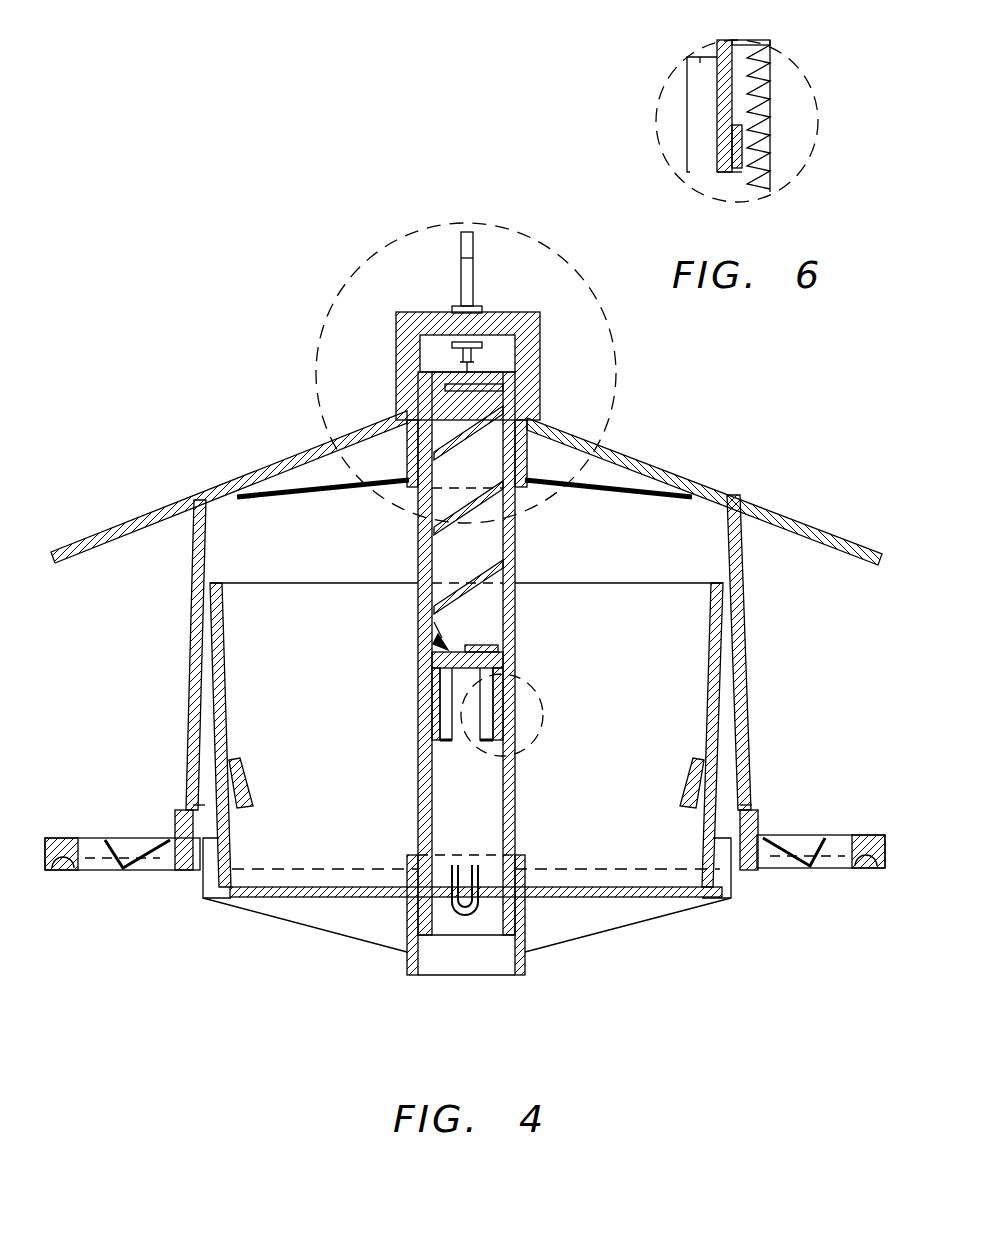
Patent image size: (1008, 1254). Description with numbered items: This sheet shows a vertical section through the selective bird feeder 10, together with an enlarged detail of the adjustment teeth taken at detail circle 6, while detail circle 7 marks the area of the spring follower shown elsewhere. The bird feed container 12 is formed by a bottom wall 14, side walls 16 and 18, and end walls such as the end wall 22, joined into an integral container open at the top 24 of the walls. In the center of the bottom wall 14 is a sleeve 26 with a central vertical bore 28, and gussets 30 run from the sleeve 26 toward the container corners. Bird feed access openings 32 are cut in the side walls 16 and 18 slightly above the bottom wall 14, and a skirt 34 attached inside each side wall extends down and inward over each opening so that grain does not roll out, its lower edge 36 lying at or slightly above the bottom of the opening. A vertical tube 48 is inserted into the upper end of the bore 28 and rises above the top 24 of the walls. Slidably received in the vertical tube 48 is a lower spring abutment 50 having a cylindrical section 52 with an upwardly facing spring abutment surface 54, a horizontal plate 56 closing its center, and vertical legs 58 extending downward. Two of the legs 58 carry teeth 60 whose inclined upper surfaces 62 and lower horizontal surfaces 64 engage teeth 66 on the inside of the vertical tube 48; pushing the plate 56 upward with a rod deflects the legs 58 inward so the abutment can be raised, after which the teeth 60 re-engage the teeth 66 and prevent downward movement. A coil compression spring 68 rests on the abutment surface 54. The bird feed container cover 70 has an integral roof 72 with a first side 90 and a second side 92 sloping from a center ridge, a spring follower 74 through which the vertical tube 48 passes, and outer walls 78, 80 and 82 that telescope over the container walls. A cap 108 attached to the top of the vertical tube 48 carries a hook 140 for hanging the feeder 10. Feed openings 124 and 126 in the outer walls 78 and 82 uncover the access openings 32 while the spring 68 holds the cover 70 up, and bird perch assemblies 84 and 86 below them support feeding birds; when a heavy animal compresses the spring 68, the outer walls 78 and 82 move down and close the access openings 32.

In FIG. 4, the detail area of FIG. 6 is at (548, 716).
In FIG. 4, the detail area of FIG. 7 is at (320, 318).
In FIG. 4, the bird feeder 10 is at (484, 959).
In FIG. 4, the bird feed container 12 is at (652, 938).
In FIG. 4, the bottom wall 14 is at (270, 900).
In FIG. 4, the side wall 16 is at (236, 852).
In FIG. 4, the side wall 18 is at (708, 668).
In FIG. 4, the end wall 22 is at (365, 592).
In FIG. 4, the top of the side walls and end walls 24 is at (290, 582).
In FIG. 4, the sleeve 26 is at (407, 938).
In FIG. 4, the central vertical bore 28 is at (458, 963).
In FIG. 4, the gussets 30 is at (347, 922).
In FIG. 4, the bird feed access openings 32 is at (200, 800).
In FIG. 4, the skirt 34 is at (248, 772).
In FIG. 4, the lower edge of skirt 36 is at (690, 800).
In FIG. 4, the vertical tube 48 is at (420, 790).
In FIG. 6, the vertical tube 48 is at (770, 140).
In FIG. 4, the lower spring abutment 50 is at (430, 632).
In FIG. 4, the cylindrical section 52 is at (448, 676).
In FIG. 6, the cylindrical section 52 is at (701, 57).
In FIG. 4, the spring abutment surface 54 is at (432, 640).
In FIG. 4, the horizontal plate 56 is at (478, 650).
In FIG. 4, the vertical legs 58 is at (440, 705).
In FIG. 6, the vertical legs 58 is at (675, 118).
In FIG. 6, the teeth 60 is at (740, 175).
In FIG. 6, the inclined upper surfaces 62 is at (768, 92).
In FIG. 6, the lower horizontal surfaces 64 is at (723, 174).
In FIG. 6, the teeth 66 is at (735, 42).
In FIG. 4, the coil compression spring 68 is at (505, 548).
In FIG. 4, the bird feed container cover 70 is at (300, 436).
In FIG. 4, the roof 72 is at (150, 514).
In FIG. 4, the spring follower 74 is at (540, 455).
In FIG. 4, the outer wall 78 is at (745, 660).
In FIG. 4, the outer wall 80 is at (700, 548).
In FIG. 4, the outer wall 82 is at (188, 668).
In FIG. 4, the bird perch assembly 84 is at (838, 848).
In FIG. 4, the bird perch assembly 86 is at (108, 855).
In FIG. 4, the first side of roof 90 is at (778, 512).
In FIG. 4, the second side of roof 92 is at (222, 484).
In FIG. 4, the cap 108 is at (490, 312).
In FIG. 4, the feed opening 124 is at (755, 788).
In FIG. 4, the feed opening 126 is at (185, 790).
In FIG. 4, the hook 140 is at (467, 230).